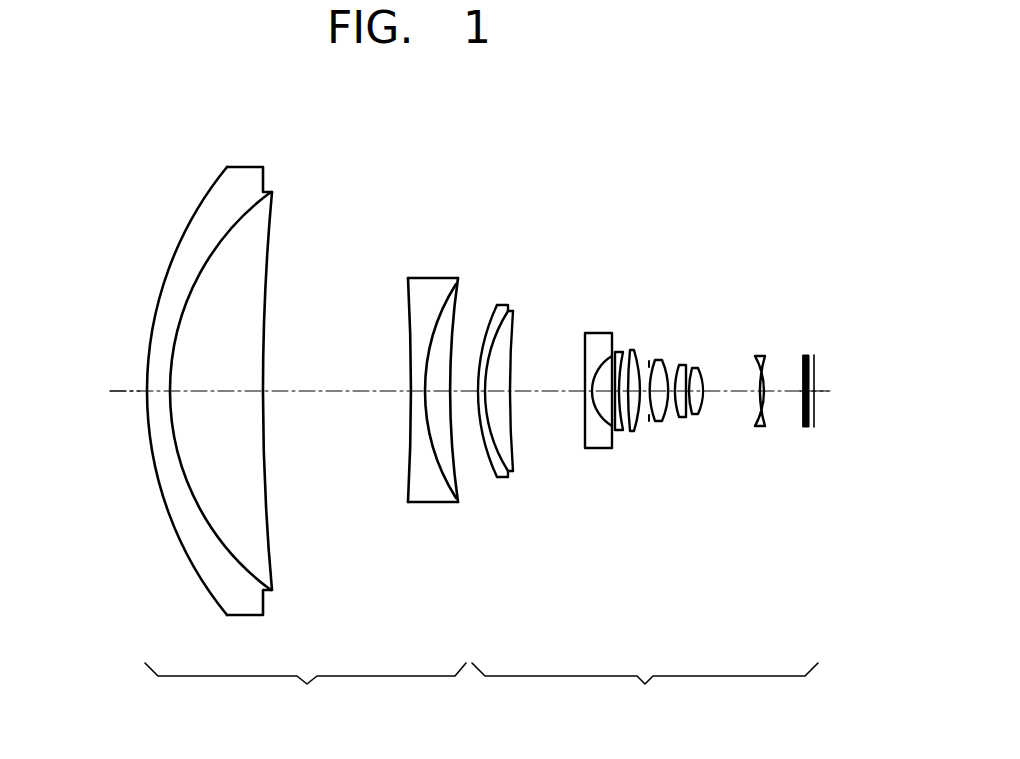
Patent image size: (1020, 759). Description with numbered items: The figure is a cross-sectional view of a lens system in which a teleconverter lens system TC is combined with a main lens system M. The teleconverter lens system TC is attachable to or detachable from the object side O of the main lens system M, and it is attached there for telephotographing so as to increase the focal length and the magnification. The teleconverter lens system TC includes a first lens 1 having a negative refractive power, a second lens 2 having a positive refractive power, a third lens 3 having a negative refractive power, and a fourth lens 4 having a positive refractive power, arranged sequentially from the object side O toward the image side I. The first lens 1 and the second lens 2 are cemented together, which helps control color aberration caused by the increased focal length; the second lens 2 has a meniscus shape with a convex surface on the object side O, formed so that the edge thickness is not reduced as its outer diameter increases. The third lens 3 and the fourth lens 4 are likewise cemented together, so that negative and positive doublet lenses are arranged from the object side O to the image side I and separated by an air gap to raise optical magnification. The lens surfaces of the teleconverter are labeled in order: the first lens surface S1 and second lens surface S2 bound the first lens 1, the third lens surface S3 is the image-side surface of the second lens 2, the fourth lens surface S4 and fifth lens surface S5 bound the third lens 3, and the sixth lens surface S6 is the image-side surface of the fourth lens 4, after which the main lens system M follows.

The first lens 1 is at (182, 364).
The second lens 2 is at (227, 363).
The third lens 3 is at (404, 369).
The fourth lens 4 is at (452, 389).
The first lens surface S1 is at (158, 468).
The second lens surface S2 is at (199, 513).
The third lens surface S3 is at (271, 540).
The fourth lens surface S4 is at (408, 468).
The fifth lens surface S5 is at (441, 467).
The sixth lens surface S6 is at (457, 448).
The object side O is at (103, 393).
The image side I is at (823, 391).
The teleconverter lens system TC is at (305, 692).
The main lens system M is at (645, 512).